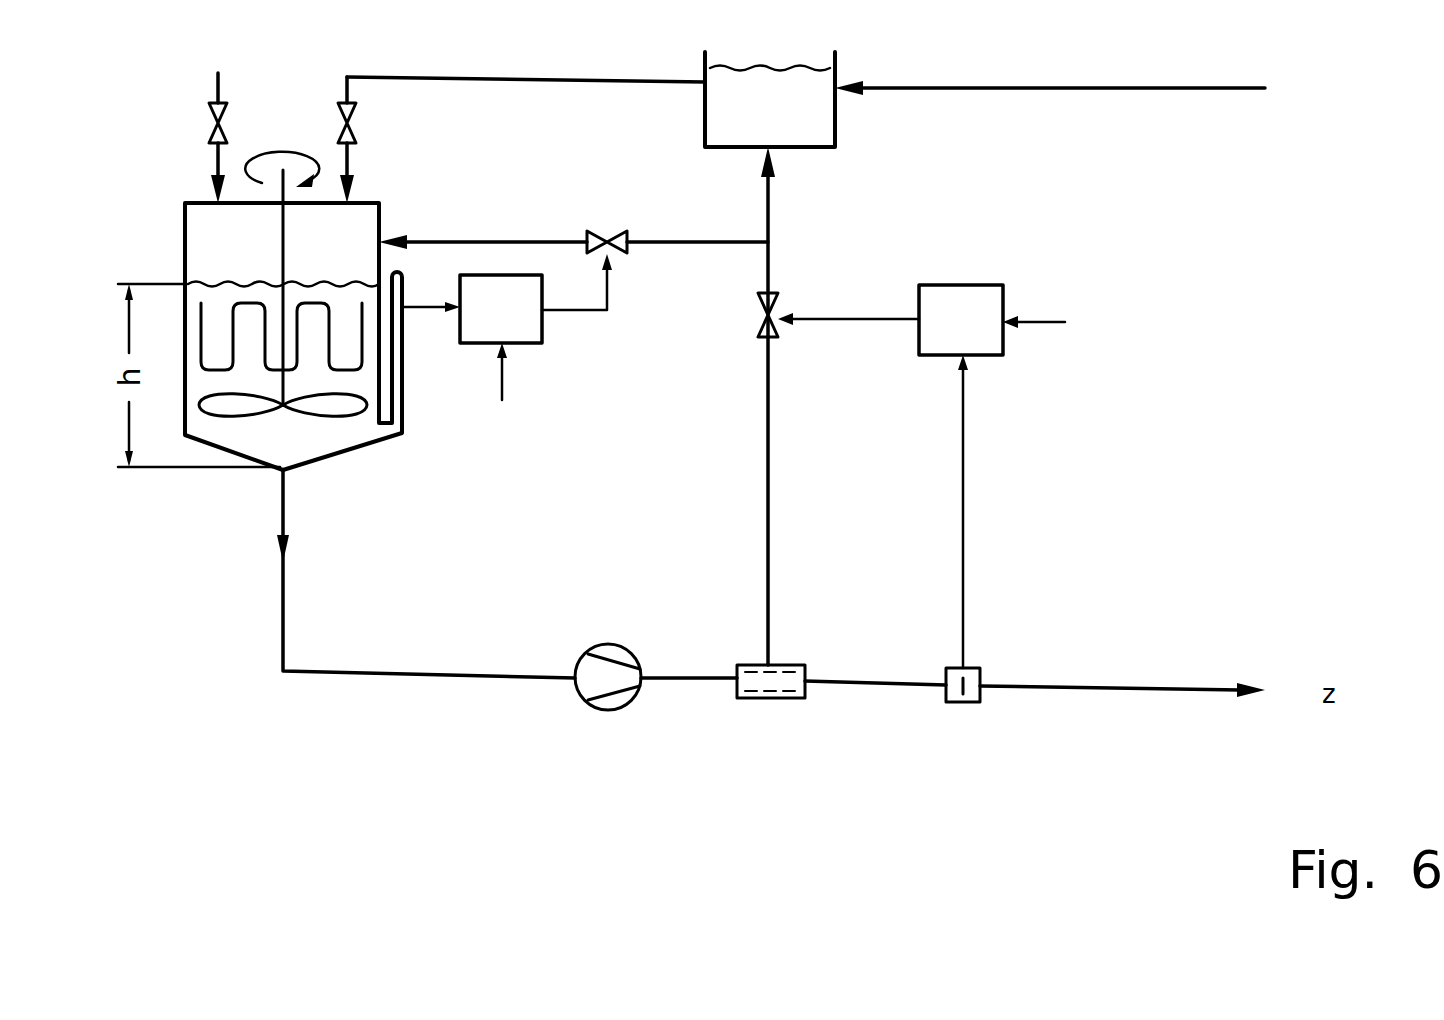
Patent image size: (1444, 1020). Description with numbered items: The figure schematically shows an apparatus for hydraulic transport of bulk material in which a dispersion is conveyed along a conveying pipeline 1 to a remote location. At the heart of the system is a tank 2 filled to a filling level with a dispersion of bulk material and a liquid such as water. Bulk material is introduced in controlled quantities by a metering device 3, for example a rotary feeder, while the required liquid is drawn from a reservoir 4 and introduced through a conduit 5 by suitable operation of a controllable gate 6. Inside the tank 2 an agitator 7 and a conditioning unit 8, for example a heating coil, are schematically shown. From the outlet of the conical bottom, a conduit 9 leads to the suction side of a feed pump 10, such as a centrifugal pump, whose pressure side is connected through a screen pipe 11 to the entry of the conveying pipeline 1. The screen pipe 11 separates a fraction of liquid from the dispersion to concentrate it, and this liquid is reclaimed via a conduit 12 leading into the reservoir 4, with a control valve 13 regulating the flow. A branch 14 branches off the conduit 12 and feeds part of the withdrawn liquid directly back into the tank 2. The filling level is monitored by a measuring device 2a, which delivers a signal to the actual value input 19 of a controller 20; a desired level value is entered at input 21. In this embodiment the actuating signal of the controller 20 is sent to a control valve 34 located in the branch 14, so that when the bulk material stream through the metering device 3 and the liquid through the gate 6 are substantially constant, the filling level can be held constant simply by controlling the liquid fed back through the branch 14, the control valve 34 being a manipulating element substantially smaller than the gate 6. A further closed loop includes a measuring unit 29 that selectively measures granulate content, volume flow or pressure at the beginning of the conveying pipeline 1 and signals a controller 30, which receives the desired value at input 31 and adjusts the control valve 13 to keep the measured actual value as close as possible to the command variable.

The conveying pipeline 1 is at (1122, 690).
The tank 2 is at (183, 220).
The measuring device 2a is at (407, 291).
The metering device 3 is at (205, 135).
The reservoir 4 is at (835, 138).
The conduit 5 is at (623, 76).
The controllable gate 6 is at (357, 135).
The agitator 7 is at (222, 407).
The conditioning unit 8 is at (201, 320).
The conduit 9 is at (281, 632).
The feed pump 10 is at (610, 711).
The screen pipe 11 is at (773, 700).
The conduit 12 is at (773, 487).
The control valve 13 is at (760, 332).
The branch 14 is at (687, 242).
The actual value input 19 is at (413, 310).
The controller 20 is at (542, 330).
The input 21 is at (502, 395).
The measuring unit 29 is at (963, 702).
The controller 30 is at (1003, 350).
The input 31 is at (1065, 322).
The control valve 34 is at (590, 235).